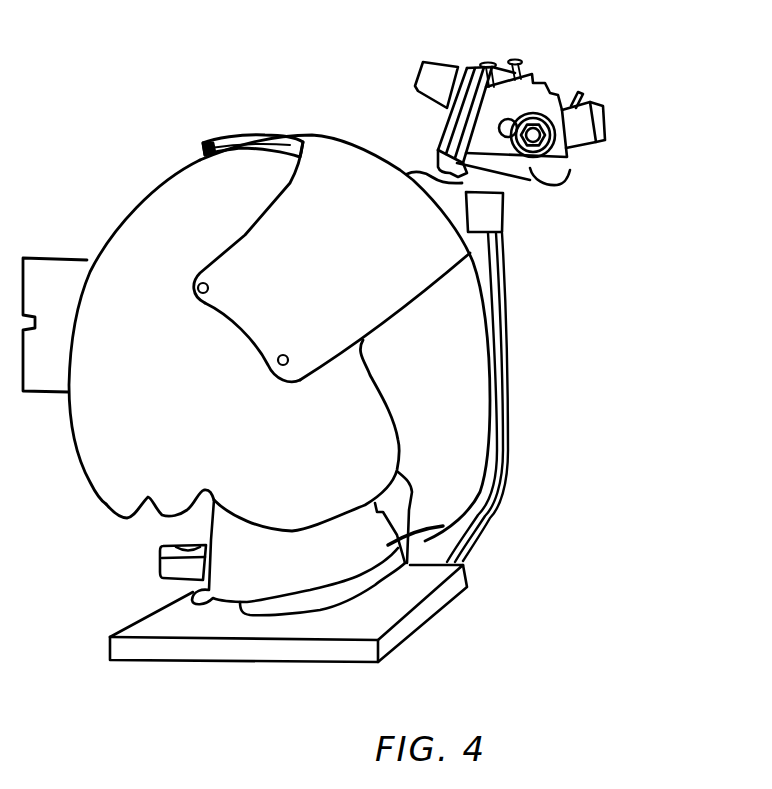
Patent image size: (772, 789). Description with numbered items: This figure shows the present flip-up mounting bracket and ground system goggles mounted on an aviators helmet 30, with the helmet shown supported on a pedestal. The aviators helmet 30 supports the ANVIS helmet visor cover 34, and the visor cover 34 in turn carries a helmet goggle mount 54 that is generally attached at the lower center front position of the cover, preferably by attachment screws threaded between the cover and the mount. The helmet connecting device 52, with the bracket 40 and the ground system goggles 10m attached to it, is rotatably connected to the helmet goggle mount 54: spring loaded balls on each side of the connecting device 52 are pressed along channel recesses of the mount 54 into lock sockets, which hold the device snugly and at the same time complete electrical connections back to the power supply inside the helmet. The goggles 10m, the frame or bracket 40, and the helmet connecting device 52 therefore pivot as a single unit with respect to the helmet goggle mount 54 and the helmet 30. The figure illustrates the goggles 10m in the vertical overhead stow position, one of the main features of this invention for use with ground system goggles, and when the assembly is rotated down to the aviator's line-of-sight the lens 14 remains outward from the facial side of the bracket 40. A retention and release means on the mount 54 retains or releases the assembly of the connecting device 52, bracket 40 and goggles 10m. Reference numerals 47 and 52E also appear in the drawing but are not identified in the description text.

The lens 14 is at (415, 67).
The ground system goggles 10m is at (533, 64).
The aviators helmet 30 is at (147, 197).
The helmet visor cover 34 is at (313, 138).
The bracket 40 is at (534, 180).
The clamp 47 is at (533, 167).
The helmet connecting device 52 is at (528, 200).
The cable end 52E is at (533, 182).
The helmet goggle mount 54 is at (522, 242).